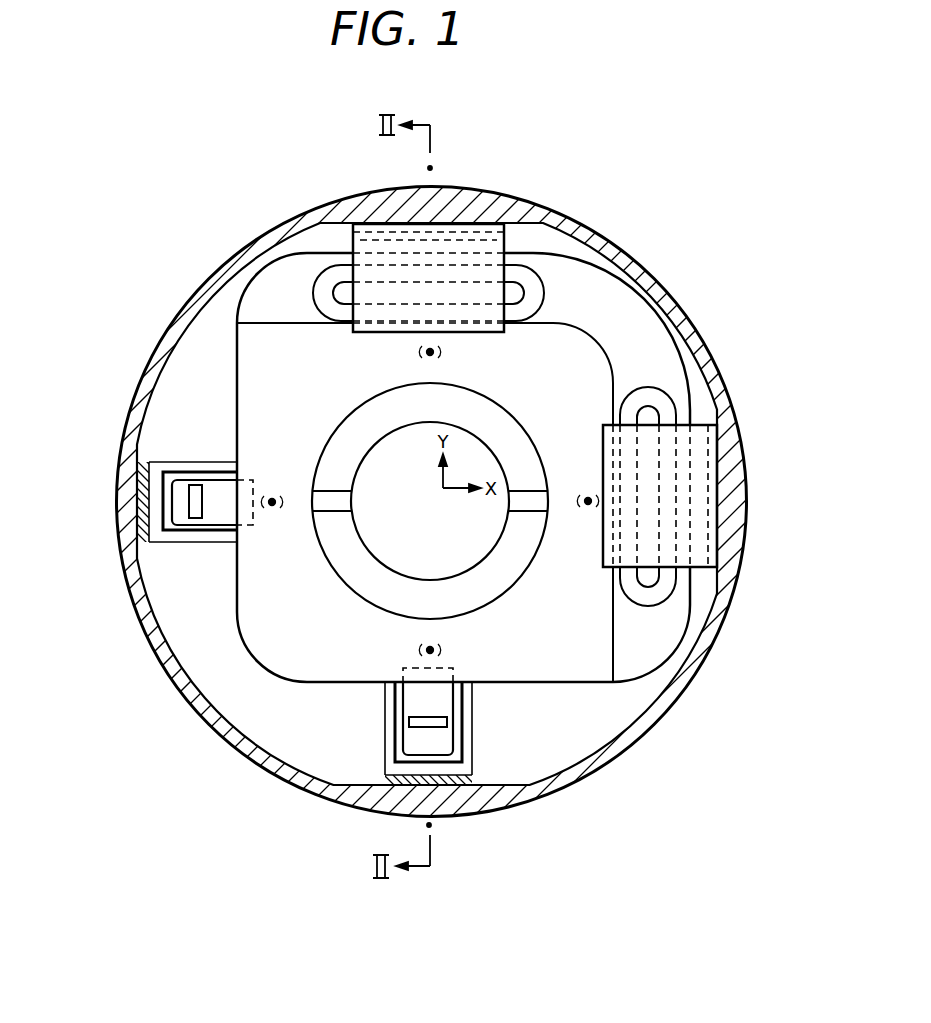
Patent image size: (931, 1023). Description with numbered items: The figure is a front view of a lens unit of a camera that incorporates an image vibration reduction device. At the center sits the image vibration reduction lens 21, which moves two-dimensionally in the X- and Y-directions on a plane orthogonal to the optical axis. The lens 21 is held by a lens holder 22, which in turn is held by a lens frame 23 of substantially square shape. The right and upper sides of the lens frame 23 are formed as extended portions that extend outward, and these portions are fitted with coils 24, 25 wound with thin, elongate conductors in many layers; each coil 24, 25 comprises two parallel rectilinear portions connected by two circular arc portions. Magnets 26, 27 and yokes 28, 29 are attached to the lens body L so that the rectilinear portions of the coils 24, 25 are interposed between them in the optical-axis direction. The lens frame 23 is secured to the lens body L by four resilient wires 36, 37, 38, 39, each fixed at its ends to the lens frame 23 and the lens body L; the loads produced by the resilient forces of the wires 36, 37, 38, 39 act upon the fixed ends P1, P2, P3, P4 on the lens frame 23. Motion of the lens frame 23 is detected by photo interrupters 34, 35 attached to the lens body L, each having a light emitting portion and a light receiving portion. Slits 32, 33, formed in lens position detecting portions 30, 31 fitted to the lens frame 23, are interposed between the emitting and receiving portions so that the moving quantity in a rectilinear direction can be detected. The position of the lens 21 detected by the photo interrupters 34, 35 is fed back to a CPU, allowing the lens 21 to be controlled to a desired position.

The image vibration reduction lens 21 is at (400, 552).
The lens holder 22 is at (477, 592).
The lens frame 23 is at (658, 633).
The coil 24 is at (533, 267).
The coil 25 is at (667, 408).
The magnet 26 is at (483, 300).
The magnet 27 is at (650, 548).
The yoke 28 is at (363, 228).
The yoke 29 is at (717, 455).
The lens position detecting portion 30 is at (188, 480).
The lens position detecting portion 31 is at (415, 699).
The slit 32 is at (193, 500).
The slit 33 is at (416, 726).
The photo interrupter 34 is at (168, 530).
The photo interrupter 35 is at (458, 742).
The wire 36 is at (440, 355).
The wire 37 is at (440, 650).
The wire 38 is at (586, 492).
The wire 39 is at (272, 493).
The lens body L is at (642, 730).
The fixed end P1 is at (425, 355).
The fixed end P2 is at (425, 651).
The fixed end P3 is at (588, 510).
The fixed end P4 is at (272, 511).